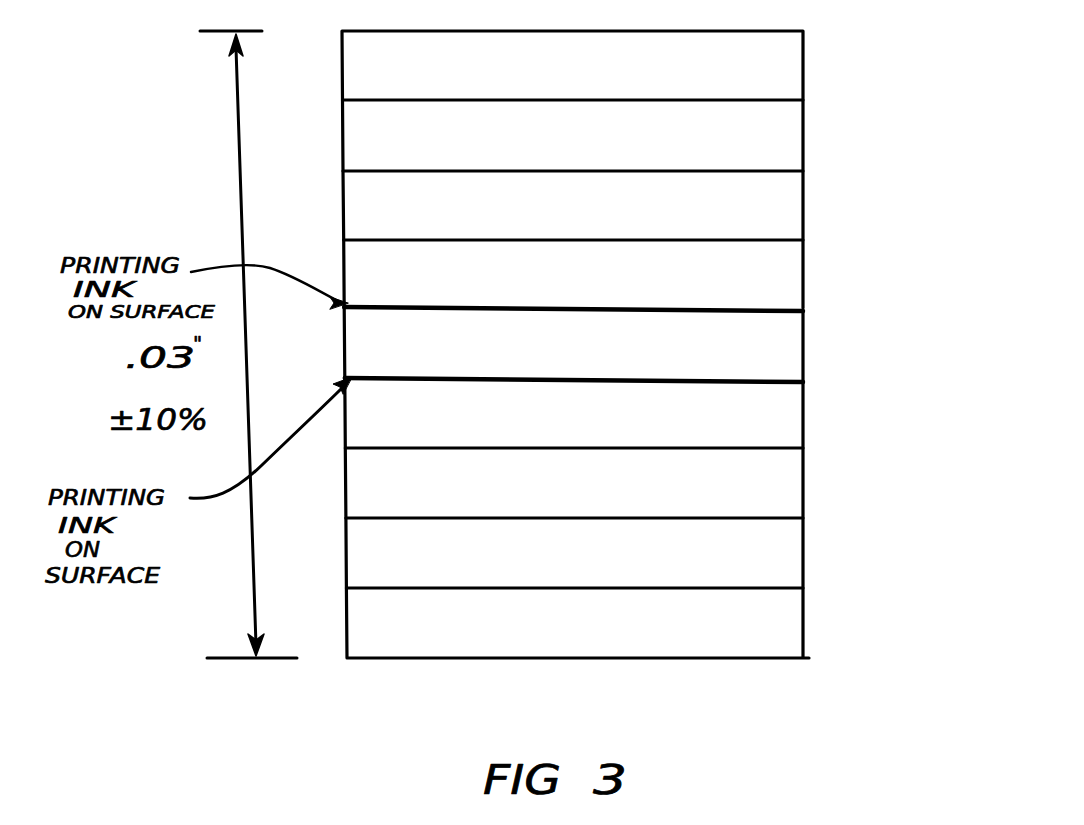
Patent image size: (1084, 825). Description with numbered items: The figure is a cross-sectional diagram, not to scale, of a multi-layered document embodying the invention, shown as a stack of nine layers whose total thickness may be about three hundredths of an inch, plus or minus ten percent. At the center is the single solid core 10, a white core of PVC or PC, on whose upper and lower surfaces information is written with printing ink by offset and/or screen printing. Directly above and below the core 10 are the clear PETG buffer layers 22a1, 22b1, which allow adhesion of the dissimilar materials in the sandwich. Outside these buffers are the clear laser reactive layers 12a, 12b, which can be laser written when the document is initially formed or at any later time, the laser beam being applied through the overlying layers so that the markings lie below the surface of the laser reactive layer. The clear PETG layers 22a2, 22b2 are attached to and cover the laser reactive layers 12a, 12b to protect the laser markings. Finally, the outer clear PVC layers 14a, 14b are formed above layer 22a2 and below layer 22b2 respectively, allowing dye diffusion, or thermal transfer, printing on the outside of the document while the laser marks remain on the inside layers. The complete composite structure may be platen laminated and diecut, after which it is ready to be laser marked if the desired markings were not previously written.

The clear layer of PVC material 14a is at (800, 72).
The clear layer of PETG 22a2 is at (793, 153).
The clear laser reactive layer 12a is at (795, 208).
The buffer layer 22a1 is at (800, 275).
The single solid core 10 is at (805, 345).
The buffer layer 22b1 is at (797, 430).
The clear laser reactive layer 12b is at (803, 497).
The clear layer of PETG 22b2 is at (795, 562).
The clear layer of PVC material 14b is at (803, 622).